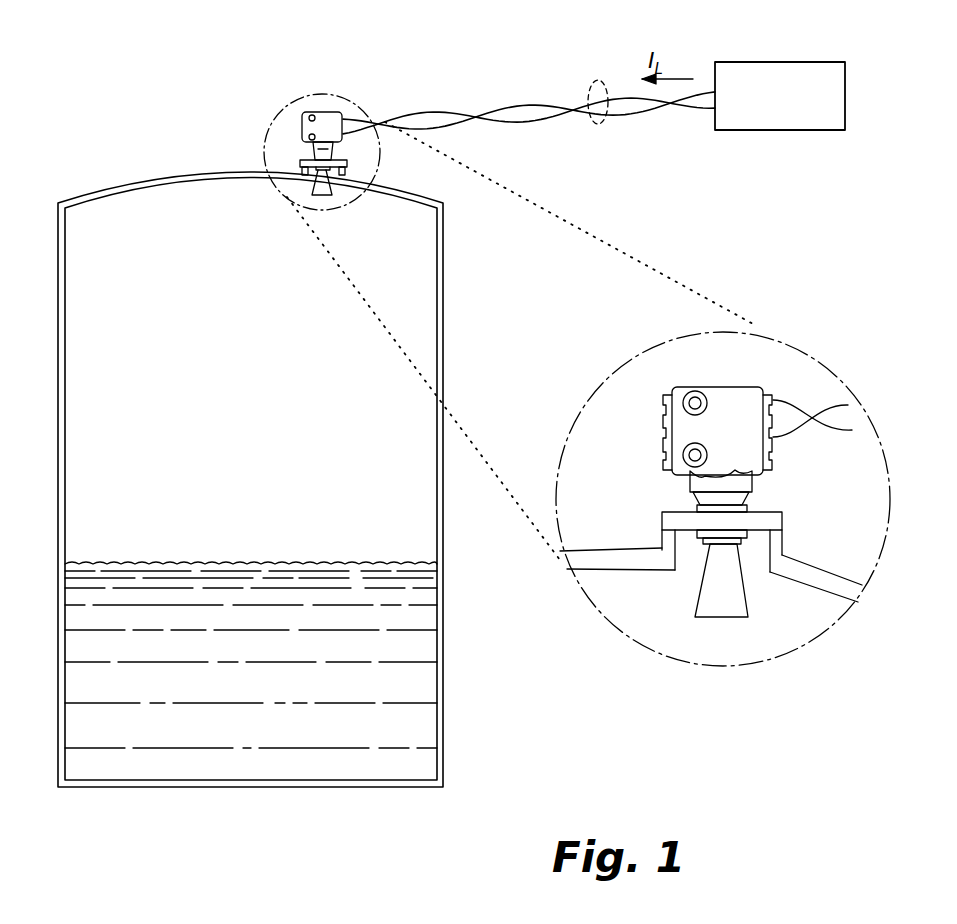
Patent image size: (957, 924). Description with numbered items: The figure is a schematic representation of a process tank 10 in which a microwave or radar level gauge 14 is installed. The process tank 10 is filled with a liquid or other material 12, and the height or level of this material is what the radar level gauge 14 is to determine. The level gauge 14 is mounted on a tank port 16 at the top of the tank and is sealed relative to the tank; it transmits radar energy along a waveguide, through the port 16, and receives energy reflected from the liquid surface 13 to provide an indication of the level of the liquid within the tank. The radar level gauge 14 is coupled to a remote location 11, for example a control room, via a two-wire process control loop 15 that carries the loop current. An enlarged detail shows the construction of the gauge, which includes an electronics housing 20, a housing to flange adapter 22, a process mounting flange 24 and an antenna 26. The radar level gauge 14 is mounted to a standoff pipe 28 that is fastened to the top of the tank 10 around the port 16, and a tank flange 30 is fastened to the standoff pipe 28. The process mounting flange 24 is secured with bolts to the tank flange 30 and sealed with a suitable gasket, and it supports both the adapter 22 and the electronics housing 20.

The process tank 10 is at (107, 160).
The remote location 11 is at (755, 62).
The liquid or other material 12 is at (400, 680).
The liquid surface 13 is at (290, 563).
The radar level gauge 14 is at (286, 110).
The two-wire process control loop 15 is at (597, 124).
The tank port 16 is at (281, 189).
The electronics housing 20 is at (723, 392).
The housing to flange adapter 22 is at (747, 500).
The process mounting flange 24 is at (785, 519).
The antenna 26 is at (722, 618).
The standoff pipe 28 is at (783, 557).
The tank flange 30 is at (658, 533).